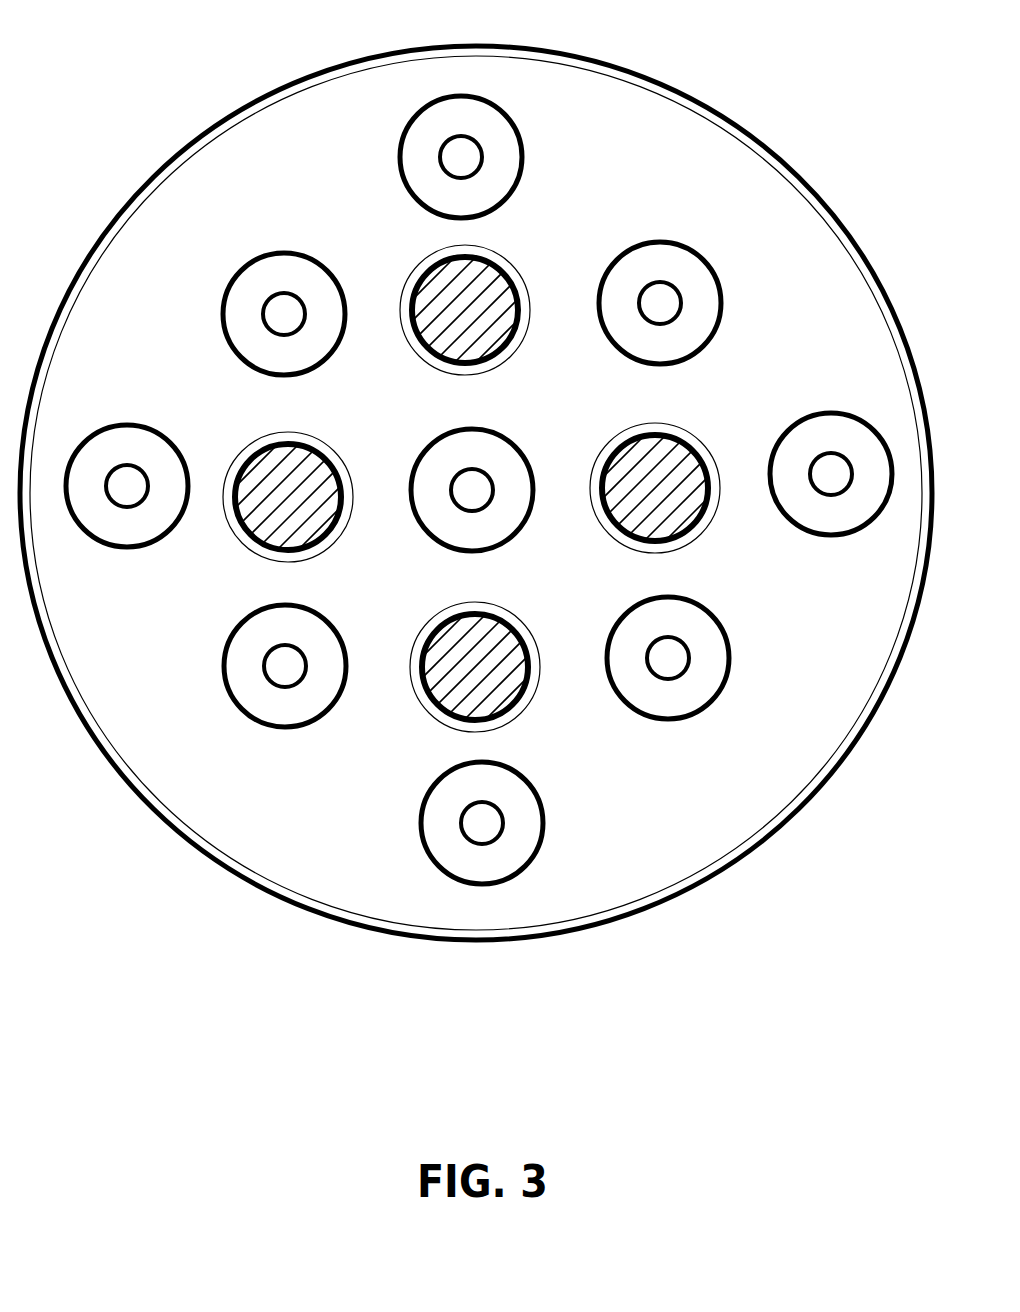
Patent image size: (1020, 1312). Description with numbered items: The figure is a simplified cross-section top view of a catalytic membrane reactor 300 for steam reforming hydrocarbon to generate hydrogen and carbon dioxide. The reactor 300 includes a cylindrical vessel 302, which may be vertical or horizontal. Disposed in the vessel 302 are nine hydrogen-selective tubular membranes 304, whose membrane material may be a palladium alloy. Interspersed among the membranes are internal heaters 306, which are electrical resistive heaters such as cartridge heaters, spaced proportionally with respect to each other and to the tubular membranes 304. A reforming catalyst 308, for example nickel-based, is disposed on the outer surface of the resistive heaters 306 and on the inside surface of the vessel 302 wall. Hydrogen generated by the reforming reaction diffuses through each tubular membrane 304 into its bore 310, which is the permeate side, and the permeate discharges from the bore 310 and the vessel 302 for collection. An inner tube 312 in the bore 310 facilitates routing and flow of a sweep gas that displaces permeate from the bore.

The catalytic membrane reactor 300 is at (512, 1096).
The vessel 302 is at (232, 117).
The tubular membranes 304 is at (479, 490).
The internal heaters 306 is at (484, 272).
The reforming catalyst 308 is at (322, 75).
The bore 310 is at (250, 335).
The inner tube 312 is at (305, 315).